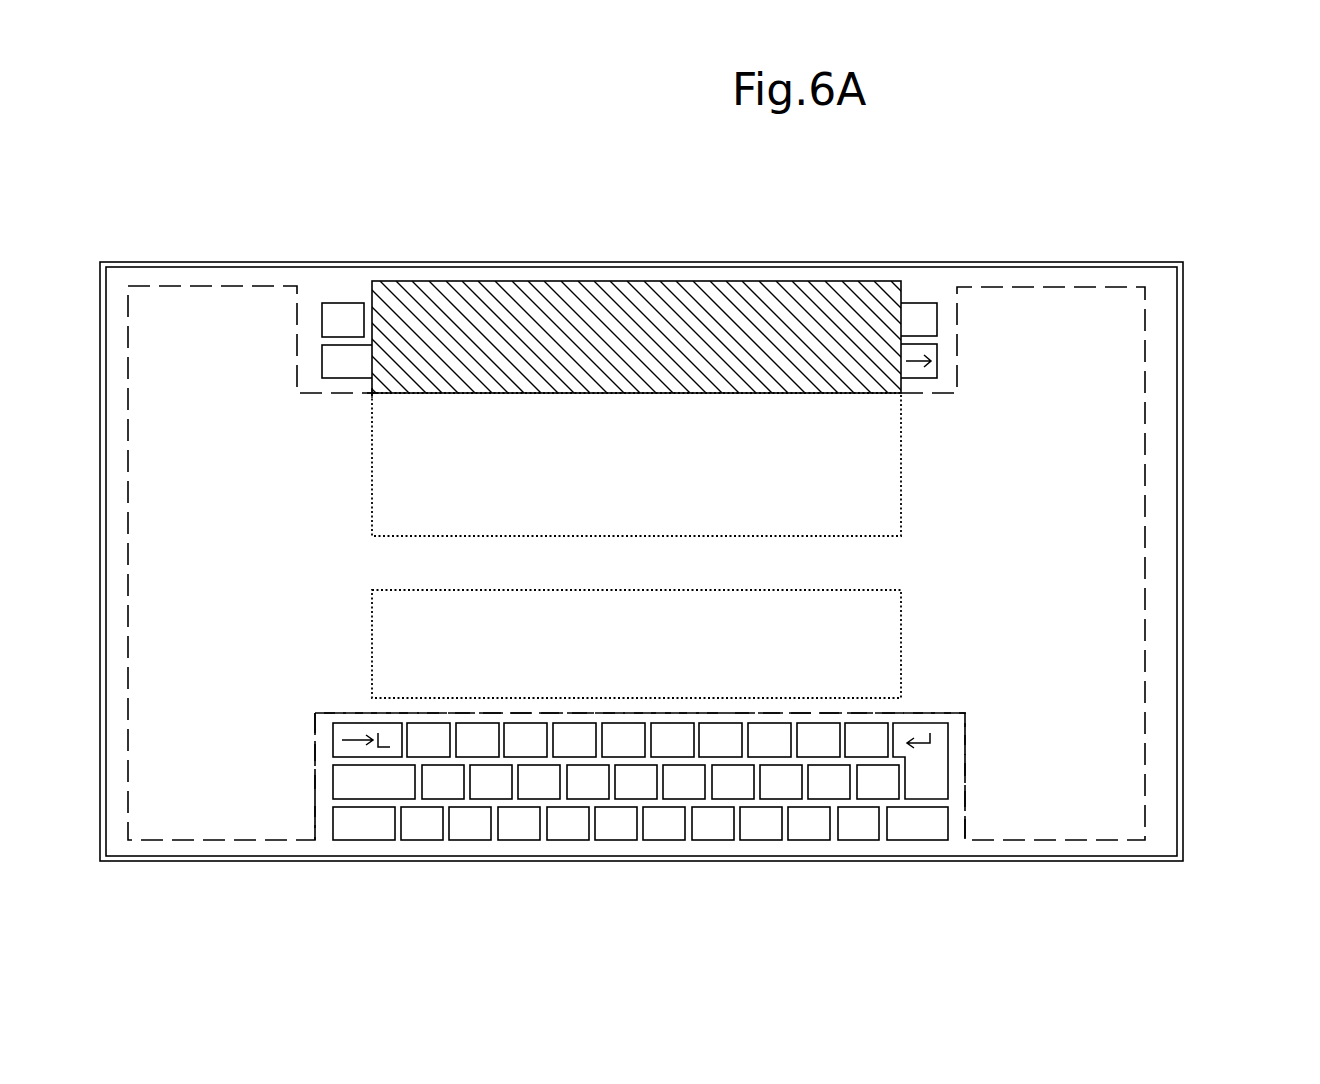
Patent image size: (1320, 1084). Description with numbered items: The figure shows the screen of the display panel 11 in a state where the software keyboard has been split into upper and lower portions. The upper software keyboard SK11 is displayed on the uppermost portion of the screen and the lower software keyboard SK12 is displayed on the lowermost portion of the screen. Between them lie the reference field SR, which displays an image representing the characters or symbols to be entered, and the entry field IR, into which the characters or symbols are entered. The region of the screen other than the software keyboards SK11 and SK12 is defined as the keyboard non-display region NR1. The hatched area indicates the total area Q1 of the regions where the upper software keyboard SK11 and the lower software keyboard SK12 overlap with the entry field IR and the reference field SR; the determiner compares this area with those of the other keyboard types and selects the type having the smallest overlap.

The display panel 11 is at (267, 262).
The upper software keyboard SK11 is at (918, 303).
The lower software keyboard SK12 is at (920, 840).
The reference field SR is at (893, 434).
The entry field IR is at (901, 638).
The keyboard non-display region NR1 is at (1145, 465).
The total area Q1 is at (372, 393).